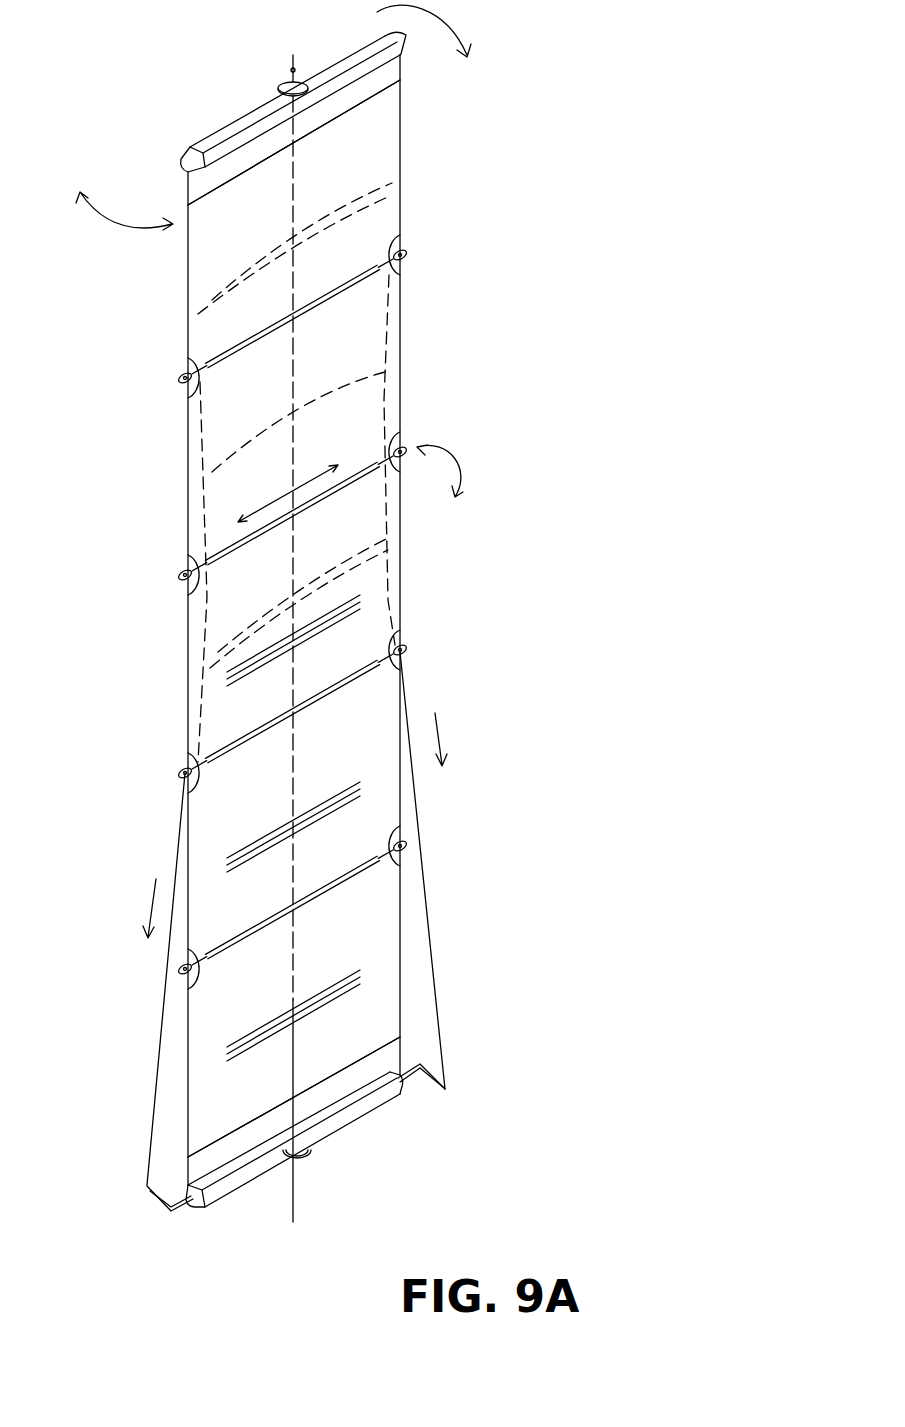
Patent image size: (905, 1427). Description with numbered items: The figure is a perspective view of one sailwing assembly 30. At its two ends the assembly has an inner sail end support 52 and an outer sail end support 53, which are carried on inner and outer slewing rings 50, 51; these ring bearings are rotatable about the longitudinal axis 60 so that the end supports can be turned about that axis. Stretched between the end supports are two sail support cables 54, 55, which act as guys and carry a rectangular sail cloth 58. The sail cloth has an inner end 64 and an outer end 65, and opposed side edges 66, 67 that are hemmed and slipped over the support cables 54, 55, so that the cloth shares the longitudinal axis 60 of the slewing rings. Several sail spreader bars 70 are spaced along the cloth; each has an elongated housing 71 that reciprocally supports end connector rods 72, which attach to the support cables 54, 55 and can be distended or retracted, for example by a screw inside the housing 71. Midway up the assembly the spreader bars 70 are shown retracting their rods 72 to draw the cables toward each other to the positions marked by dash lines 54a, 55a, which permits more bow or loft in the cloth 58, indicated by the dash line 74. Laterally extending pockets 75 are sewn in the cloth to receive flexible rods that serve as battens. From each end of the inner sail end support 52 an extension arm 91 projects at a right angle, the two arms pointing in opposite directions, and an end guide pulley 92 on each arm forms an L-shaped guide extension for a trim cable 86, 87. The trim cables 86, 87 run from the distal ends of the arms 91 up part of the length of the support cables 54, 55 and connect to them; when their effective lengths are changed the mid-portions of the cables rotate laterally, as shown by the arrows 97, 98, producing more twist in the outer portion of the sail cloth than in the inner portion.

The sailwing assembly 30 is at (447, 322).
The inner slewing ring 50 is at (312, 1158).
The outer slewing ring 51 is at (280, 87).
The inner sail end support 52 is at (228, 1195).
The outer sail end support 53 is at (218, 138).
The sail support cable 54 is at (400, 372).
The dash line indicating retracted sail support cable 54a is at (385, 422).
The sail support cable 55 is at (187, 450).
The dash line indicating retracted sail support cable 55a is at (205, 492).
The sail cloth 58 is at (341, 190).
The longitudinal axis 60 is at (291, 60).
The inner end of sail cloth 64 is at (199, 1133).
The outer end of sail cloth 65 is at (378, 156).
The side edge of sail cloth 66 is at (197, 267).
The side edge of sail cloth 67 is at (383, 230).
The sail spreader bar 70 is at (343, 293).
The elongated housing 71 is at (281, 332).
The end connector rod 72 is at (380, 274).
The dash line indicating sail loft 74 is at (331, 391).
The laterally extending pocket 75 is at (268, 250).
The trim cable 86 is at (163, 1017).
The trim cable 87 is at (429, 922).
The extension arm 91 is at (421, 1070).
The end guide pulley 92 is at (447, 1090).
The rotation direction 97 is at (422, 614).
The rotation direction 98 is at (185, 797).